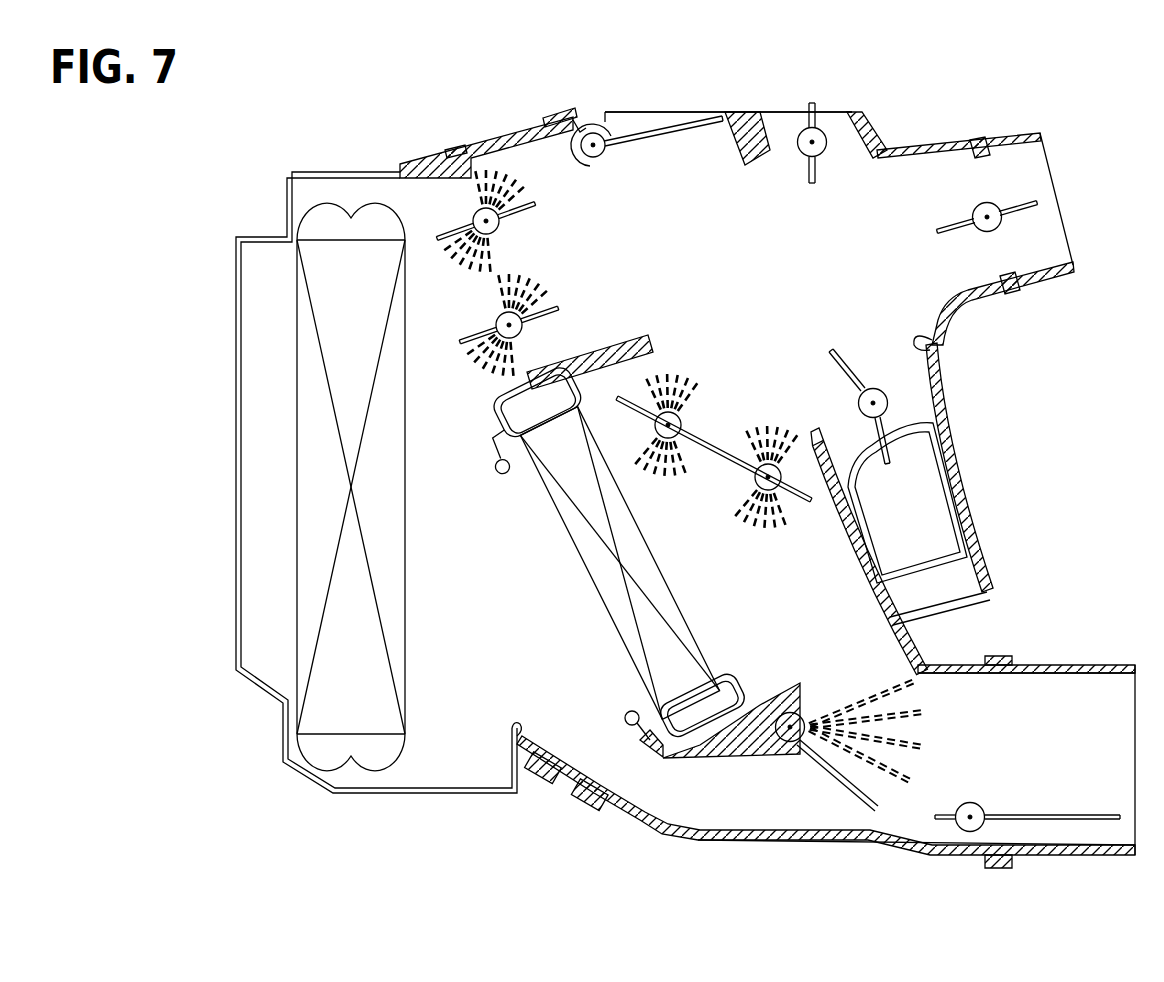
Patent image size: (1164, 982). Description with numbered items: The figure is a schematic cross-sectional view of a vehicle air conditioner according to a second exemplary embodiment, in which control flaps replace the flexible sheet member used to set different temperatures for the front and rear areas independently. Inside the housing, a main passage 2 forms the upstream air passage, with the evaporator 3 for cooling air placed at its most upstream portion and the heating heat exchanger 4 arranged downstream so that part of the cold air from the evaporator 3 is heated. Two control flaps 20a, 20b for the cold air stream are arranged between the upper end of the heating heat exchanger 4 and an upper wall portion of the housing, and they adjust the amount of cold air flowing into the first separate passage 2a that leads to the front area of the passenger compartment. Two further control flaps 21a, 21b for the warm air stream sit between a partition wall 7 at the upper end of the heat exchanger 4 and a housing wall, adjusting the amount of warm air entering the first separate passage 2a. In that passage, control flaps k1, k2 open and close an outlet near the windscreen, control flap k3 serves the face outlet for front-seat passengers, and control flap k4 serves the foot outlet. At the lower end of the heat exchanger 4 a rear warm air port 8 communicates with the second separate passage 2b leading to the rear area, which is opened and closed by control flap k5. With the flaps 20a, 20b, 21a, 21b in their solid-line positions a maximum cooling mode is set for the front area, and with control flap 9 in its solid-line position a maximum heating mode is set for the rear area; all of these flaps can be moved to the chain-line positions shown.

The main passage 2 is at (462, 695).
The first separate passage 2a is at (723, 178).
The second separate passage 2b is at (985, 727).
The evaporator 3 is at (330, 430).
The heating heat exchanger 4 is at (617, 572).
The partition wall 7 is at (646, 330).
The rear warm air port 8 is at (847, 670).
The control flap 9 is at (858, 790).
The control flap 20a is at (533, 215).
The control flap 20b is at (556, 308).
The control flap 21a is at (710, 428).
The control flap 21b is at (798, 492).
The control flap k1 is at (640, 133).
The control flap k2 is at (818, 128).
The control flap k3 is at (990, 206).
The control flap k4 is at (886, 405).
The control flap k5 is at (932, 838).